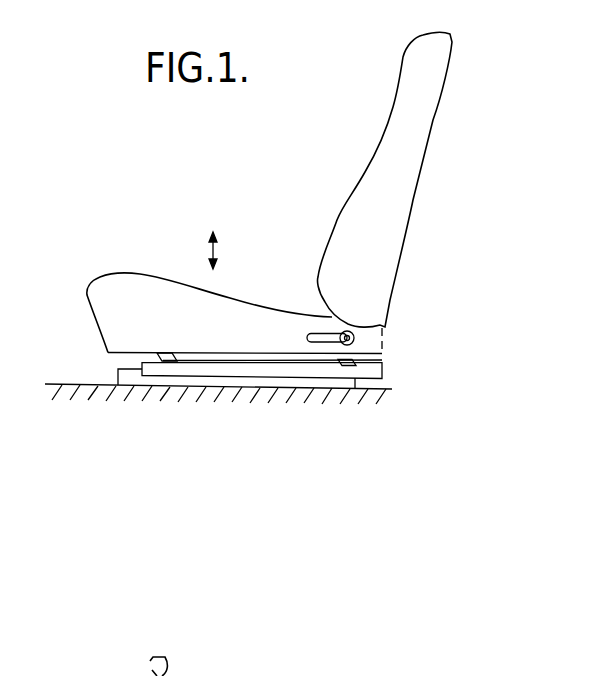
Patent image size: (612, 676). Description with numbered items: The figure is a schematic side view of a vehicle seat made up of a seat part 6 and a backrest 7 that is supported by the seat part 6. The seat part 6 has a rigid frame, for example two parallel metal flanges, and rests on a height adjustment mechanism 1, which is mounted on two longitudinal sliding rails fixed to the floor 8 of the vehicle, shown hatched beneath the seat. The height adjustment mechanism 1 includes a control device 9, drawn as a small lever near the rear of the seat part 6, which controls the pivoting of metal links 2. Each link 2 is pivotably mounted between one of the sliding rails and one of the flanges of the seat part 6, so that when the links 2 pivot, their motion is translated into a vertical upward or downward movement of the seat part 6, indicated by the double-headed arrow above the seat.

The height adjustment mechanism 1 is at (384, 362).
The metal links 2 is at (163, 361).
The seat part 6 is at (103, 283).
The backrest 7 is at (417, 112).
The floor 8 is at (78, 383).
The control device 9 is at (325, 337).